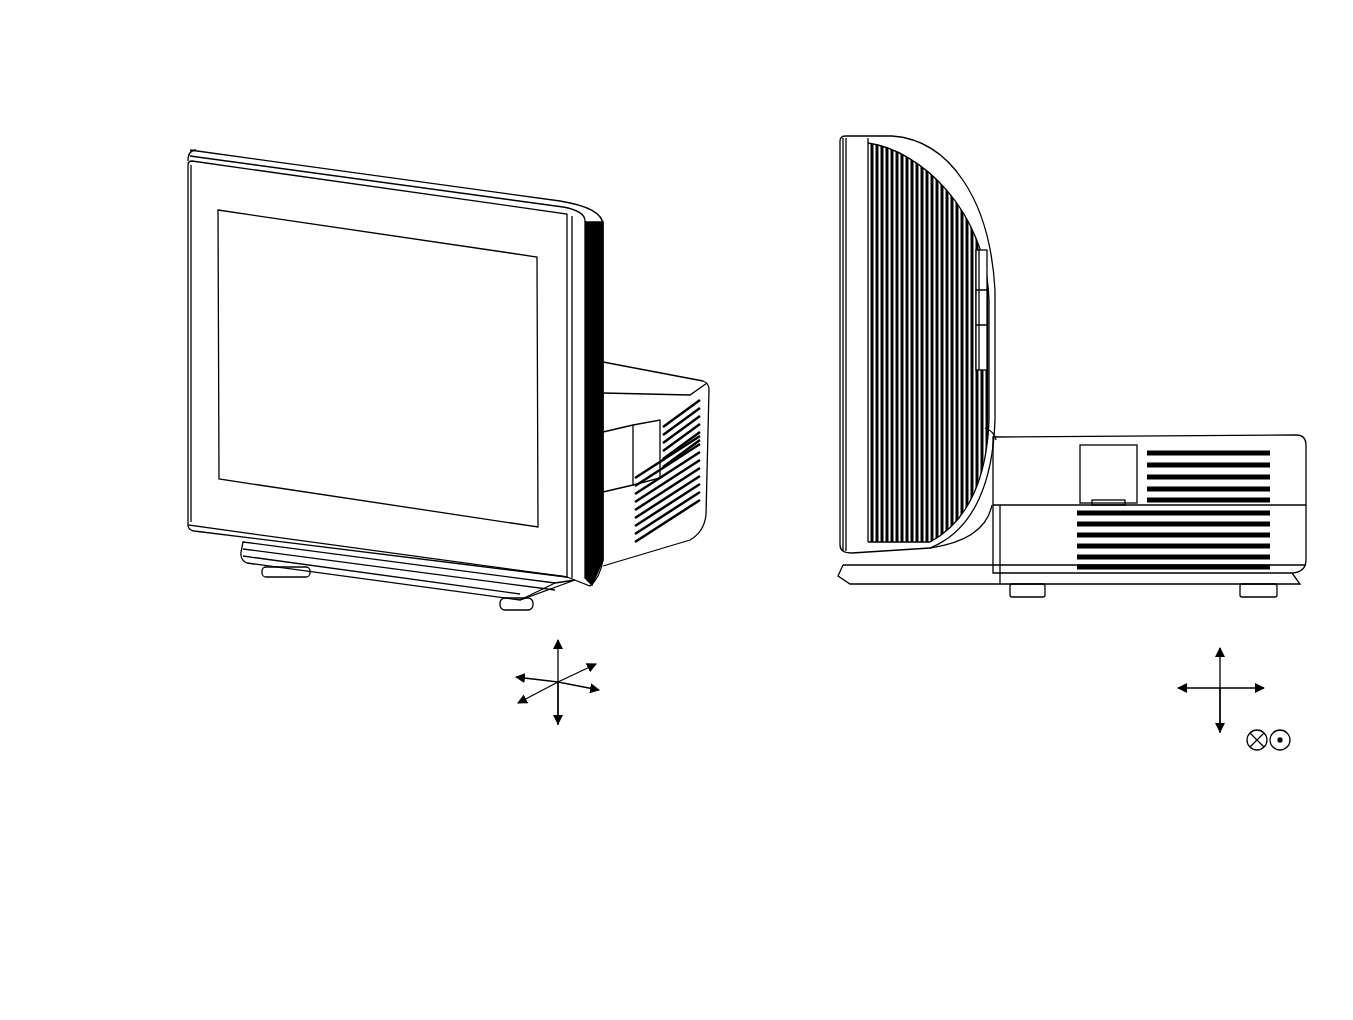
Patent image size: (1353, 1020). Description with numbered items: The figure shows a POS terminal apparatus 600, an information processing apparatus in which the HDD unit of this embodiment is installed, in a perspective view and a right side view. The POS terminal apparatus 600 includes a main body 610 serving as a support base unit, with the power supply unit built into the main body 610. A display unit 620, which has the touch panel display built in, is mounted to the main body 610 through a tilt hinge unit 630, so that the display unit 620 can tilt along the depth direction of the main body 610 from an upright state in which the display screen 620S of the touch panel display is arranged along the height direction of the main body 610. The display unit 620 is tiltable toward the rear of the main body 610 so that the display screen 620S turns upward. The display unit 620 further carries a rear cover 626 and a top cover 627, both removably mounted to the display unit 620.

The POS terminal apparatus 600 is at (203, 594).
The main body 610 is at (618, 540).
The display unit 620 is at (196, 228).
The display screen 620S is at (238, 375).
The rear cover 626 is at (992, 255).
The top cover 627 is at (925, 151).
The tilt hinge unit 630 is at (996, 437).